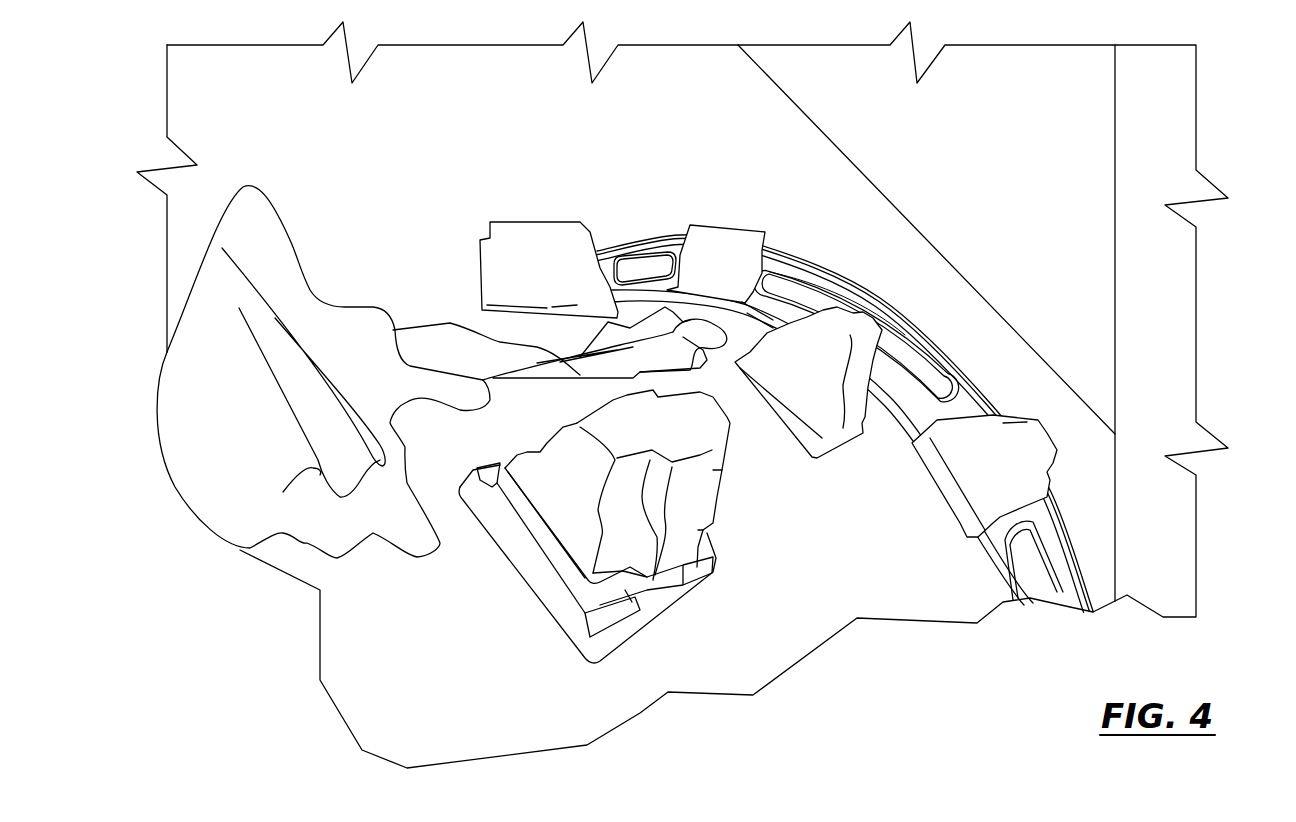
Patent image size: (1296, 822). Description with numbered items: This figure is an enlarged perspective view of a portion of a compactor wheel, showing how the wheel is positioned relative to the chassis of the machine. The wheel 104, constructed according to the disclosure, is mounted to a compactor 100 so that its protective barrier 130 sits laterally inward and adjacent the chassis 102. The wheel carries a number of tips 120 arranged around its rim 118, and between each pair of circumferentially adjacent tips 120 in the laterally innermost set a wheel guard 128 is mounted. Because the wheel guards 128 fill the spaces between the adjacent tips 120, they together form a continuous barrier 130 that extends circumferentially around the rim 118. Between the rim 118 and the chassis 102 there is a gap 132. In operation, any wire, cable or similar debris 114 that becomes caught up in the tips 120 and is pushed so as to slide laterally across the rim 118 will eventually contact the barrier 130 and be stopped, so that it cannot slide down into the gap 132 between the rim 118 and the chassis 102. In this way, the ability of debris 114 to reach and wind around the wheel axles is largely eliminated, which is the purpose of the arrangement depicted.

The compactor 100 is at (1153, 280).
The chassis 102 is at (921, 238).
The wheel 104 is at (881, 638).
The debris 114 is at (448, 318).
The rim 118 is at (763, 548).
The tips 120 is at (695, 242).
The wheel guard 128 is at (903, 358).
The barrier 130 is at (995, 375).
The gap 132 is at (853, 272).